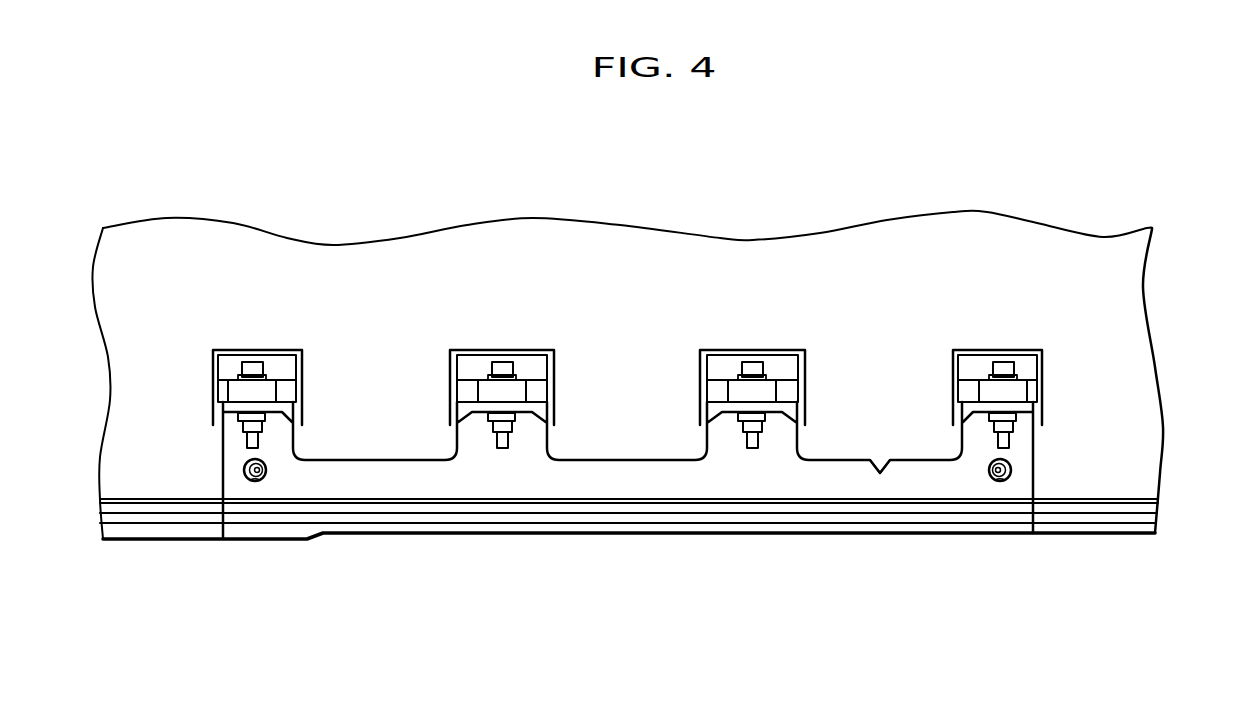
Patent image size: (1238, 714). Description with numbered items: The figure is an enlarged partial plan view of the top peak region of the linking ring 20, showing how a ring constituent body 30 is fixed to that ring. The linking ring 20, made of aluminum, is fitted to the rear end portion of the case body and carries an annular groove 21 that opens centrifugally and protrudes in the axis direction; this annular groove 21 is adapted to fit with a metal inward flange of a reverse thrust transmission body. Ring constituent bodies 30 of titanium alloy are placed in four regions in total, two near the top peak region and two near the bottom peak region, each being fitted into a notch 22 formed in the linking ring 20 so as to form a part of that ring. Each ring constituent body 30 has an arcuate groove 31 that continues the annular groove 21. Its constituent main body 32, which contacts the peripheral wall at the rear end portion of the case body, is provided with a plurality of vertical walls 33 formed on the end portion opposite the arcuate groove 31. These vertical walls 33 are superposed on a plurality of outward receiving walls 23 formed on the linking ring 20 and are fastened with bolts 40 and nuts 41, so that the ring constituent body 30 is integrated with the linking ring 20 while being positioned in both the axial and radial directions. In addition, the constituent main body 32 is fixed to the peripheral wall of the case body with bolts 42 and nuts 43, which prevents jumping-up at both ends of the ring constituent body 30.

The linking ring 20 is at (360, 331).
The annular groove 21 is at (1127, 514).
The notch 22 is at (888, 460).
The outward receiving wall 23 is at (233, 388).
The ring constituent body 30 is at (858, 535).
The arcuate groove 31 is at (650, 514).
The constituent main body 32 is at (600, 482).
The vertical wall 33 is at (270, 407).
The bolt 40 is at (505, 360).
The nut 41 is at (512, 428).
The bolt 42 is at (245, 484).
The nut 43 is at (266, 484).